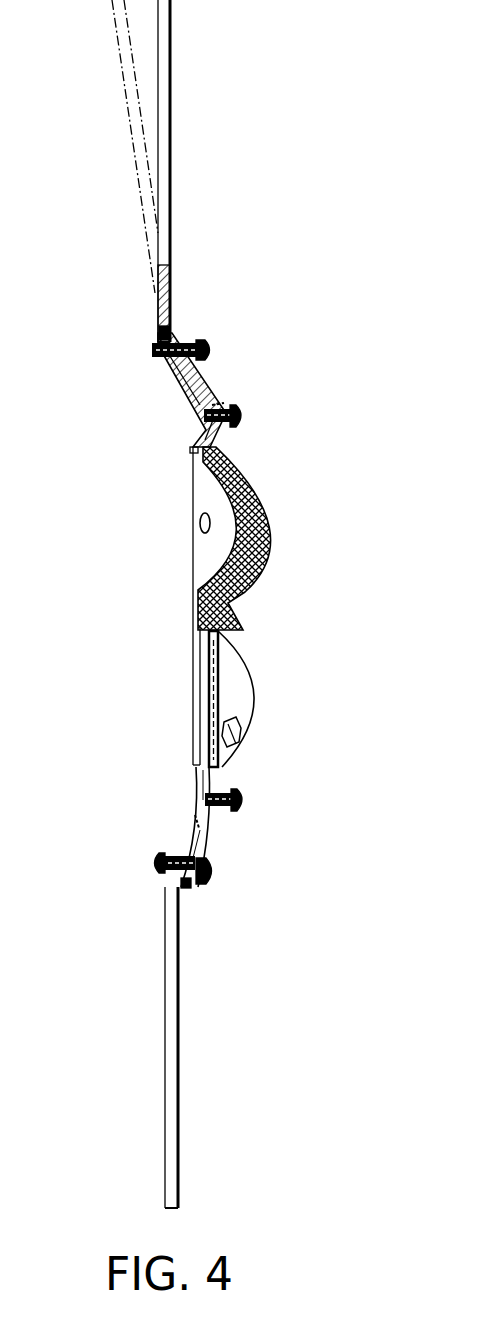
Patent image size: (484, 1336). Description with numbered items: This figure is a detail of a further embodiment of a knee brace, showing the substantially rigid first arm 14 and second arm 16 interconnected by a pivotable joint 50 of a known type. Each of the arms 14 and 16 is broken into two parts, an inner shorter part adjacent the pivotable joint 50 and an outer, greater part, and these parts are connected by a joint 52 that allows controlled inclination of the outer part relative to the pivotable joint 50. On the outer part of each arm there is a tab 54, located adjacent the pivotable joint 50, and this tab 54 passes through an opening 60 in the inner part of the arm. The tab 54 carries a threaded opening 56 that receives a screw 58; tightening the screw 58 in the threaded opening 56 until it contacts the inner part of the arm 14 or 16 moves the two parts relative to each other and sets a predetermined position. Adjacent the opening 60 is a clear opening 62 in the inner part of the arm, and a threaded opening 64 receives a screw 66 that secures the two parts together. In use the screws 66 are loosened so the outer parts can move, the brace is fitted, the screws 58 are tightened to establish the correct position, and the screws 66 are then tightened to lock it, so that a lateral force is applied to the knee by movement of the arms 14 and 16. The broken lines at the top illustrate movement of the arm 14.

The first arm 14 is at (128, 120).
The second arm 16 is at (179, 1085).
The pivotable joint 50 is at (248, 606).
The joint 52 is at (222, 377).
The tab 54 is at (180, 390).
The threaded opening 56 is at (223, 405).
The screw 58 is at (245, 417).
The opening 60 is at (190, 380).
The clear opening 62 is at (165, 332).
The threaded opening 64 is at (160, 358).
The screw 66 is at (205, 340).